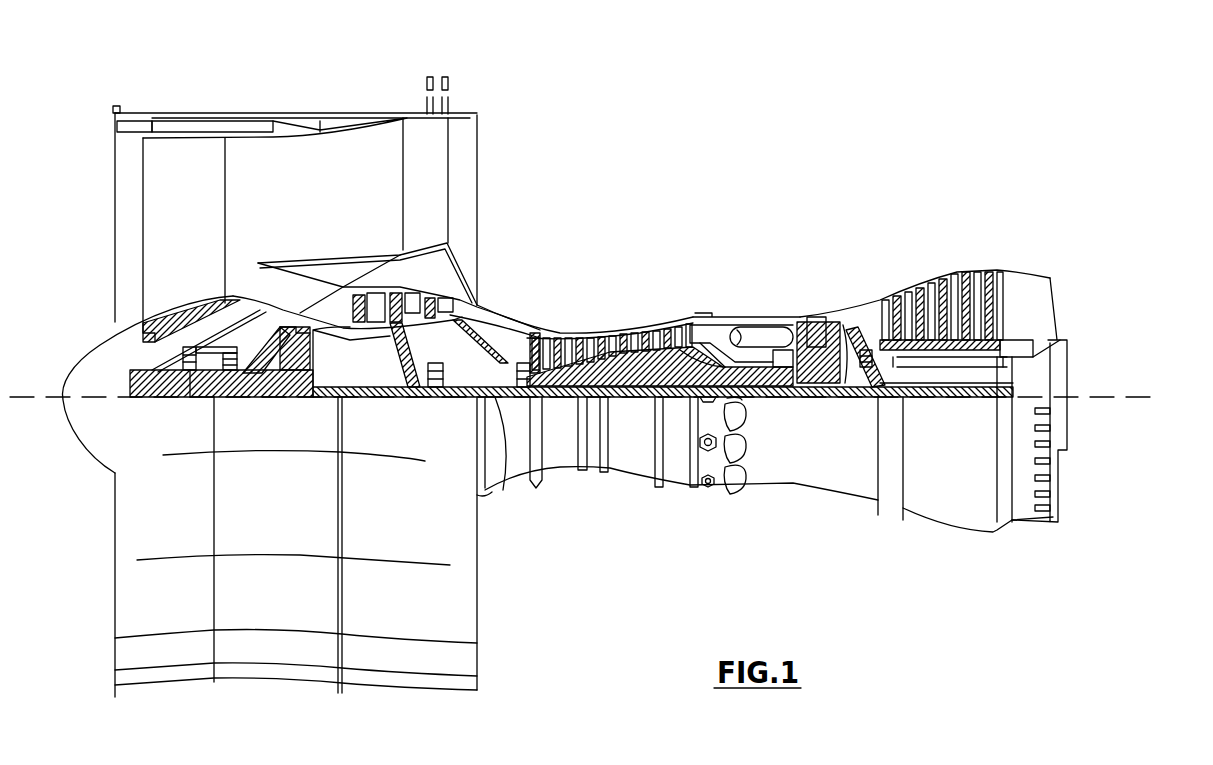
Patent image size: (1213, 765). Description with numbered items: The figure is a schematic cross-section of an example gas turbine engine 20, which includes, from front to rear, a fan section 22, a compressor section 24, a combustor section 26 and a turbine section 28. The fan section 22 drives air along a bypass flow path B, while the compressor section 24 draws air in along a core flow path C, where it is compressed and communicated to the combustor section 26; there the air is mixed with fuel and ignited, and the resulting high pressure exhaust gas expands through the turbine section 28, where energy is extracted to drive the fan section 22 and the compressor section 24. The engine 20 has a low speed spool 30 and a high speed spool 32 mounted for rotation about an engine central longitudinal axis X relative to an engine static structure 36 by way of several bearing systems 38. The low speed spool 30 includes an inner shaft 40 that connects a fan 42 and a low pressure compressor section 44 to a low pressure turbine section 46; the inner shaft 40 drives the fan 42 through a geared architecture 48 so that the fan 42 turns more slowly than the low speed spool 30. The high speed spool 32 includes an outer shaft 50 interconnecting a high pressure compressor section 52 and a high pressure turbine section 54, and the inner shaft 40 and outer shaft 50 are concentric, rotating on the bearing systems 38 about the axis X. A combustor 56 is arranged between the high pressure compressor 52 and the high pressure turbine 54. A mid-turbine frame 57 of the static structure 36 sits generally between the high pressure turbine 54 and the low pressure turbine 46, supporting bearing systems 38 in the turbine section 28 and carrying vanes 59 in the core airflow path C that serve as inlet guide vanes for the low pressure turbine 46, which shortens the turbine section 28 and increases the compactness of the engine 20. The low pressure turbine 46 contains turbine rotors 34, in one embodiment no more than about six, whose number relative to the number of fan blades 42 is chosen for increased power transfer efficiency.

The gas turbine engine 20 is at (762, 156).
The fan section 22 is at (322, 86).
The compressor section 24 is at (335, 230).
The combustor section 26 is at (790, 230).
The turbine section 28 is at (1008, 230).
The low speed spool 30 is at (633, 410).
The high speed spool 32 is at (677, 345).
The turbine rotors 34 is at (948, 360).
The engine static structure 36 is at (674, 495).
The bearing systems 38 is at (193, 370).
The inner shaft 40 is at (496, 402).
The fan 42 is at (199, 244).
The low pressure compressor section 44 is at (412, 295).
The low pressure turbine section 46 is at (944, 285).
The geared architecture 48 is at (297, 380).
The outer shaft 50 is at (757, 385).
The high pressure compressor section 52 is at (610, 372).
The high pressure turbine section 54 is at (812, 325).
The combustor 56 is at (745, 340).
The mid-turbine frame 57 is at (861, 297).
The vanes 59 is at (858, 330).
The bypass flow path B is at (346, 188).
The core flow path C is at (298, 296).
The engine central longitudinal axis X is at (1150, 397).